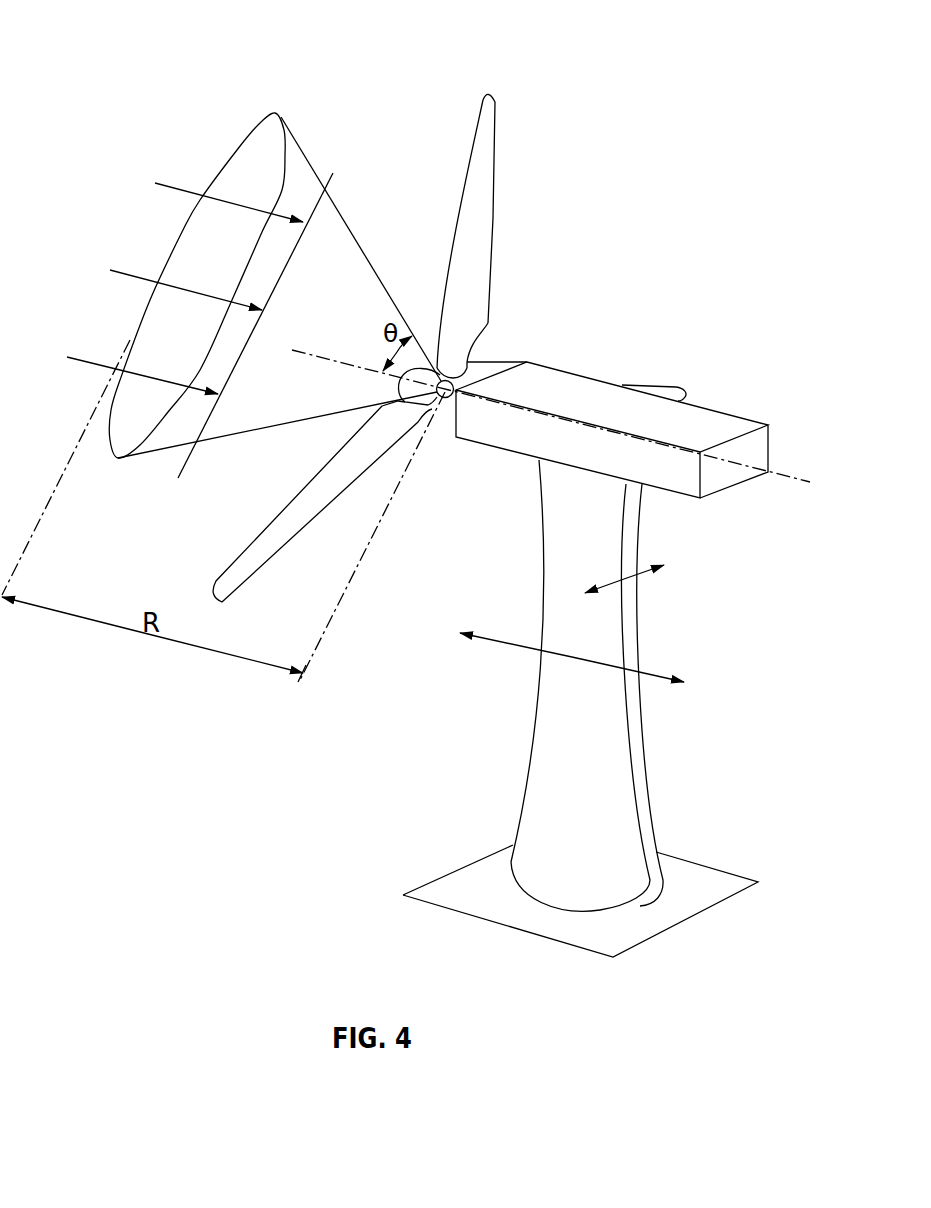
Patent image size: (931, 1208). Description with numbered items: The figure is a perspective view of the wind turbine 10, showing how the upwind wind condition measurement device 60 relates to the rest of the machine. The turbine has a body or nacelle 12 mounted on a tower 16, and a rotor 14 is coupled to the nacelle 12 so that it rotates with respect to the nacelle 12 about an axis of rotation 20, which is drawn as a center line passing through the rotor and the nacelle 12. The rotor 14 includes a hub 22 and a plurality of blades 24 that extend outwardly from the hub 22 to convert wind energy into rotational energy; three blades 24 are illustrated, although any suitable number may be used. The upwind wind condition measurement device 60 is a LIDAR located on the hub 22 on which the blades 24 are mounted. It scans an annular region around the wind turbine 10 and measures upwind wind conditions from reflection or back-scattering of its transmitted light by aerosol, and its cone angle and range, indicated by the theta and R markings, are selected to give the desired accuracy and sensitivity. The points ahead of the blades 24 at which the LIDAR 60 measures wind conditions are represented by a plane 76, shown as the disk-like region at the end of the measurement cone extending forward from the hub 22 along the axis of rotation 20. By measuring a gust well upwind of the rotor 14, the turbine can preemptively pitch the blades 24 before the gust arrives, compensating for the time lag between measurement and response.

The wind turbine 10 is at (118, 42).
The nacelle 12 is at (772, 447).
The rotor 14 is at (495, 353).
The tower 16 is at (615, 830).
The axis of rotation 20 is at (292, 350).
The hub 22 is at (413, 369).
The blades 24 is at (495, 217).
The upwind wind condition measurement device (LIDAR) 60 is at (485, 337).
The plane 76 is at (334, 172).